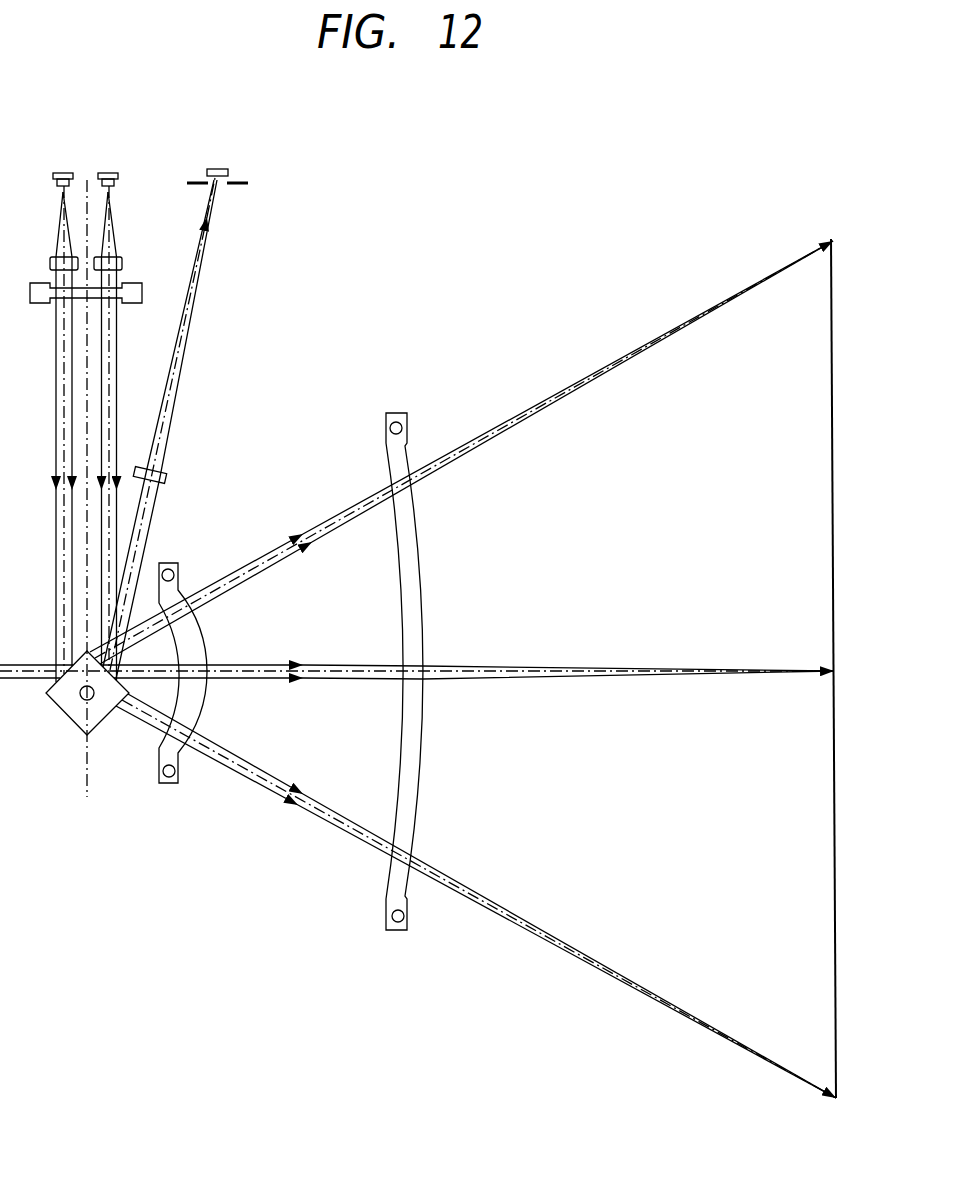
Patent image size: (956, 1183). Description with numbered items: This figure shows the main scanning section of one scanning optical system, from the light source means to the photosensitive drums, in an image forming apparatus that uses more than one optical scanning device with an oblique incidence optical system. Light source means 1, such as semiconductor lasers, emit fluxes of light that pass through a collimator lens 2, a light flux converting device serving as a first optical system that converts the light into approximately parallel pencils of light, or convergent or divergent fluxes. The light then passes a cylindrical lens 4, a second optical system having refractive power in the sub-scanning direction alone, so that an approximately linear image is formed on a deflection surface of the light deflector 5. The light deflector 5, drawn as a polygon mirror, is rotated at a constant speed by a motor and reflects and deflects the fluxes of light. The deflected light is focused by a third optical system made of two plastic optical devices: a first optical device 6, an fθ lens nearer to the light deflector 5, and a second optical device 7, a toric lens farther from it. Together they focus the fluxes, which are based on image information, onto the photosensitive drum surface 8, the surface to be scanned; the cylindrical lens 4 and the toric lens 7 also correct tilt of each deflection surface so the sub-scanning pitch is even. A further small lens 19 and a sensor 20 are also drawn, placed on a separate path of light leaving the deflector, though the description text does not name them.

The light source means 1 is at (117, 172).
The collimator lens 2 is at (122, 258).
The cylindrical lens 4 is at (142, 296).
The light deflector 5 is at (65, 714).
The first optical device 6 is at (167, 784).
The second optical device 7 is at (398, 930).
The photosensitive drum surface 8 is at (833, 262).
The synchronization detecting lens (BD lens) 19 is at (167, 472).
The synchronization detecting sensor (BD sensor) 20 is at (228, 170).